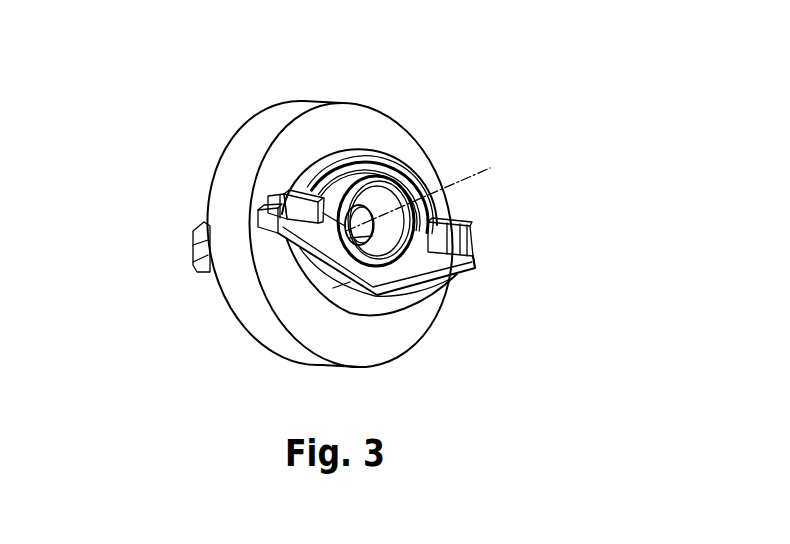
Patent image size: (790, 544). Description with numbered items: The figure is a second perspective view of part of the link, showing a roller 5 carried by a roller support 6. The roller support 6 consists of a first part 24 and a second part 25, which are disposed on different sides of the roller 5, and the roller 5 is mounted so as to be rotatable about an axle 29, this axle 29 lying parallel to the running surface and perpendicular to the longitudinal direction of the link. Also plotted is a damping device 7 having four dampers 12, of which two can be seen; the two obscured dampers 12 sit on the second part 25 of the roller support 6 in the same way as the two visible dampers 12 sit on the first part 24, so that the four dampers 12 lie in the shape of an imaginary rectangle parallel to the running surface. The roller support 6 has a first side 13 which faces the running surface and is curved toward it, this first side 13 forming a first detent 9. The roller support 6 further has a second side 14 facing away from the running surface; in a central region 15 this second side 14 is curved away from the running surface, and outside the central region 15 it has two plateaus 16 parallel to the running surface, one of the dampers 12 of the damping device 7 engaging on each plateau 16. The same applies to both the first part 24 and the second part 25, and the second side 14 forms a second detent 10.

The roller 5 is at (420, 144).
The roller support 6 is at (332, 264).
The damping device 7 is at (356, 185).
The first detent 9 is at (408, 281).
The second detent 10 is at (368, 162).
The dampers 12 is at (297, 203).
The first side 13 is at (437, 277).
The second side 14 is at (368, 162).
The central region 15 is at (375, 172).
The plateaus 16 is at (474, 240).
The first part 24 is at (473, 254).
The second part 25 is at (195, 247).
The axle 29 is at (465, 177).